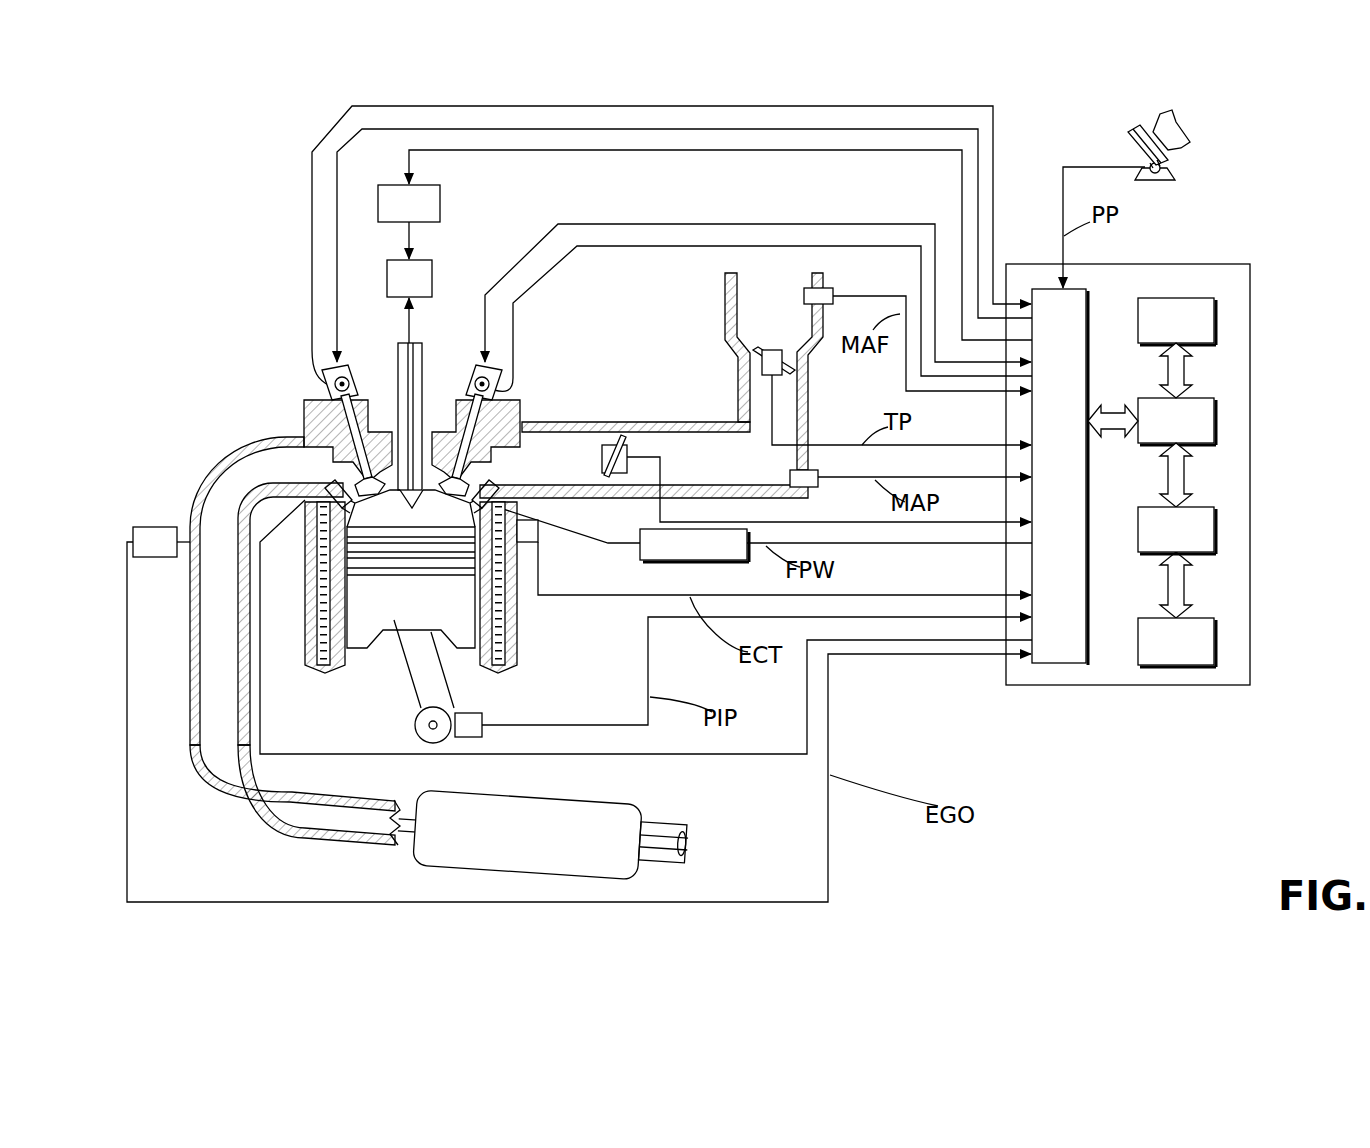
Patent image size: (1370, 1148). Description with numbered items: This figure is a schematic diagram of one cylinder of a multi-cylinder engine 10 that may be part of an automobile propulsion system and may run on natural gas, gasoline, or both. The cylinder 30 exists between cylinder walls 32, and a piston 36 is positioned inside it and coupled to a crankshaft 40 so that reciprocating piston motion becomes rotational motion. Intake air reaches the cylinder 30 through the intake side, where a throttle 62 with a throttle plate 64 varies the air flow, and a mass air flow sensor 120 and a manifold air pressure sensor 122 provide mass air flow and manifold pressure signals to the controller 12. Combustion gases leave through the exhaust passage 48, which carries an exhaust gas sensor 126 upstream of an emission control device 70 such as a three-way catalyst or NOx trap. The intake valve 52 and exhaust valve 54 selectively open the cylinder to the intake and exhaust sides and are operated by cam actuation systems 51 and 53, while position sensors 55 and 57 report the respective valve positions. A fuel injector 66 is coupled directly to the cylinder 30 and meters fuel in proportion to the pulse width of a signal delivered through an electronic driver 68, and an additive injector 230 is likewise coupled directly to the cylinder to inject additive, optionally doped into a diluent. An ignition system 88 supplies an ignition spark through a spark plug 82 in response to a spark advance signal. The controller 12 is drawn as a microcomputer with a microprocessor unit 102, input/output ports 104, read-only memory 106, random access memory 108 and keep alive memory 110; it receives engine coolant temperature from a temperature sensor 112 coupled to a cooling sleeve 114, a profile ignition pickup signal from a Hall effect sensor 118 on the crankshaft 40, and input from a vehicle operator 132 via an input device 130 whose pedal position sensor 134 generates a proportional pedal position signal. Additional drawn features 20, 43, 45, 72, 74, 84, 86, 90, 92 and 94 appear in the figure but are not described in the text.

The engine 10 is at (116, 128).
The controller 12 is at (1242, 266).
The engine 20 is at (231, 350).
The cylinder 30 is at (388, 505).
The cylinder walls 32 is at (345, 668).
The piston 36 is at (393, 633).
The crankshaft 40 is at (416, 733).
The intake passage 43 is at (755, 325).
The intake manifold 45 is at (687, 473).
The exhaust passage 48 is at (215, 506).
The cam actuation system 51 is at (478, 366).
The intake valve 52 is at (470, 452).
The cam actuation system 53 is at (342, 366).
The exhaust valve 54 is at (363, 483).
The position sensor 55 is at (494, 391).
The position sensor 57 is at (330, 388).
The throttle 62 is at (793, 360).
The throttle plate 64 is at (760, 356).
The fuel injector 66 is at (530, 510).
The electronic driver 68 is at (660, 561).
The emission control device 70 is at (648, 812).
The second throttle plate 72 is at (606, 442).
The second throttle actuator 74 is at (632, 443).
The spark plug 82 is at (400, 495).
The spark plug tip 84 is at (415, 487).
The ignition coil 86 is at (409, 278).
The ignition system 88 is at (421, 345).
The ignition system 90 is at (705, 245).
The ignition system wiring 92 is at (362, 153).
The spark plug 94 is at (403, 376).
The microprocessor unit 102 is at (1216, 418).
The input/output ports 104 is at (1090, 296).
The read-only memory 106 is at (1216, 316).
The random access memory 108 is at (1216, 526).
The keep alive memory 110 is at (1216, 640).
The temperature sensor 112 is at (530, 542).
The cooling sleeve 114 is at (504, 620).
The Hall effect sensor 118 is at (478, 712).
The mass air flow sensor 120 is at (832, 290).
The manifold air pressure sensor 122 is at (812, 487).
The exhaust gas sensor 126 is at (160, 526).
The input device 130 is at (1136, 140).
The vehicle operator 132 is at (1188, 128).
The pedal position sensor 134 is at (1170, 168).
The additive injector 230 is at (338, 490).